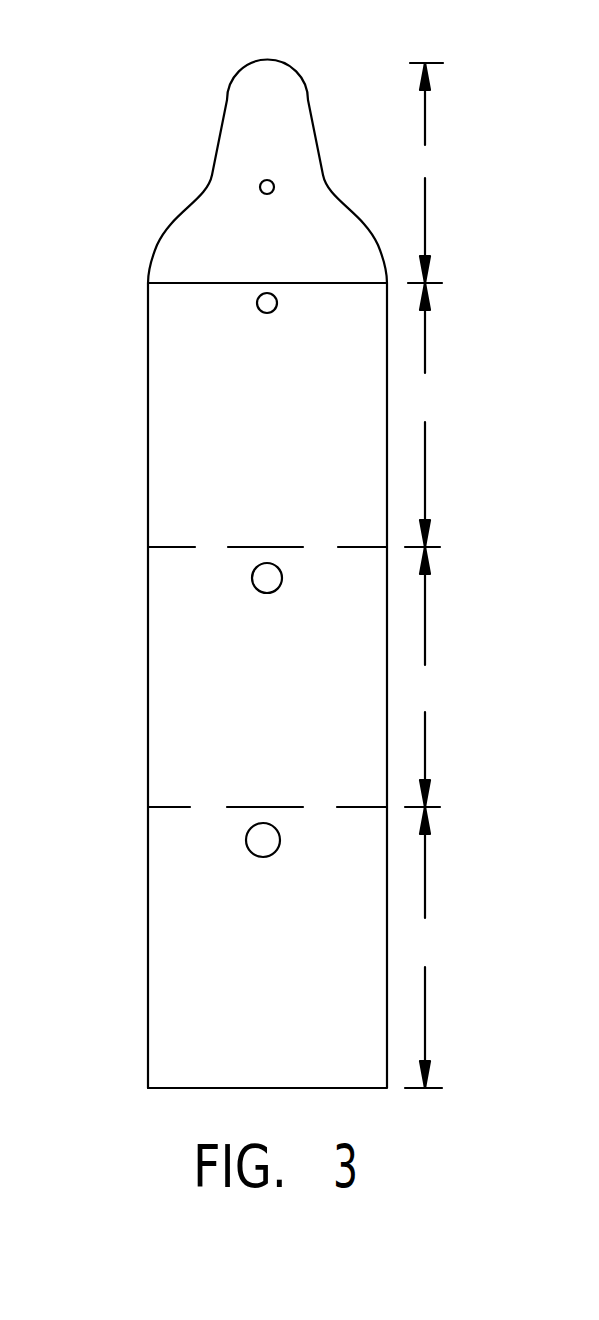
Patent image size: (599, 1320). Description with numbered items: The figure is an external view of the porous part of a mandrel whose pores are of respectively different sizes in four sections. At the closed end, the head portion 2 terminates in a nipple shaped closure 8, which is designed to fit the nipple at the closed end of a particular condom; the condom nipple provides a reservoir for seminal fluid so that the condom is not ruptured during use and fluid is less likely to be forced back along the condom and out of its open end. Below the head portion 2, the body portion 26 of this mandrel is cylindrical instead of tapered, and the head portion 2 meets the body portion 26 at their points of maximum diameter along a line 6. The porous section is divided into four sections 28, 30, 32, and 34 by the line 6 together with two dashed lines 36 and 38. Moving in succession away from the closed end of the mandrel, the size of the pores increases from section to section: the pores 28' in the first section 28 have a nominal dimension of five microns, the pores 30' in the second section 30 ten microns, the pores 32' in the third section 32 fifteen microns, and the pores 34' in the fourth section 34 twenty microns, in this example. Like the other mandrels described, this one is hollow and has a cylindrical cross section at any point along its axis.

The head portion 2 is at (215, 172).
The nipple shaped closure 8 is at (267, 80).
The line 6 is at (192, 285).
The body portion 26 is at (147, 428).
The dashed line 36 is at (175, 547).
The dashed line 38 is at (175, 807).
The first section 28 is at (426, 173).
The second section 30 is at (424, 415).
The third section 32 is at (423, 677).
The fourth section 34 is at (423, 947).
The pores 28' is at (286, 209).
The pores 30' is at (291, 322).
The pores 32' is at (293, 603).
The pores 34' is at (287, 861).